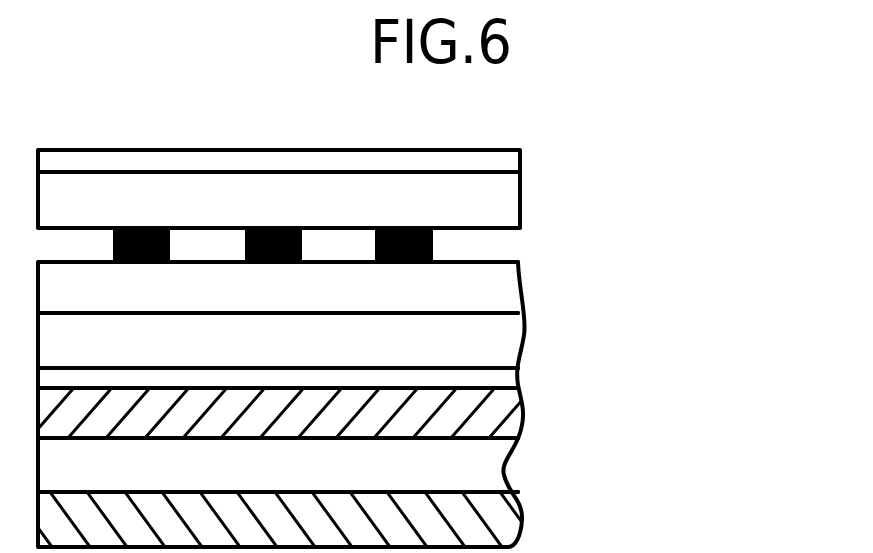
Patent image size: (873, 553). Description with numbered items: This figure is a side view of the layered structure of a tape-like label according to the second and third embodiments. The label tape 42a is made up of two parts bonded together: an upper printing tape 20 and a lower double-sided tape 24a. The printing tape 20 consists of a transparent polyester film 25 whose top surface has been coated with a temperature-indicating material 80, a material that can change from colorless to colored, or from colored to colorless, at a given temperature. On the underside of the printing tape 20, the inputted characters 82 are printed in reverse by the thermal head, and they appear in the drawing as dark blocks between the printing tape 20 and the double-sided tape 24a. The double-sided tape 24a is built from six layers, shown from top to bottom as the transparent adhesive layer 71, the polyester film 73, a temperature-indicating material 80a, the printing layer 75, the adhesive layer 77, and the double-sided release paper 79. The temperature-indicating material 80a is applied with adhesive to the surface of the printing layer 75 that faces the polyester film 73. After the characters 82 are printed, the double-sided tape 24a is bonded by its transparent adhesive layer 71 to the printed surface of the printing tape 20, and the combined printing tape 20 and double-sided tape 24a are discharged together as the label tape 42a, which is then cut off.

The printing tape 20 is at (650, 130).
The temperature-indicating material 80 is at (512, 163).
The transparent polyester film 25 is at (490, 205).
The inputted characters 82 is at (486, 247).
The label tape 42a is at (753, 150).
The double-sided tape 24a is at (650, 285).
The transparent adhesive layer 71 is at (502, 298).
The polyester film 73 is at (505, 345).
The temperature-indicating material 80a is at (500, 380).
The printing layer 75 is at (510, 427).
The adhesive layer 77 is at (485, 473).
The double-sided release paper 79 is at (512, 523).